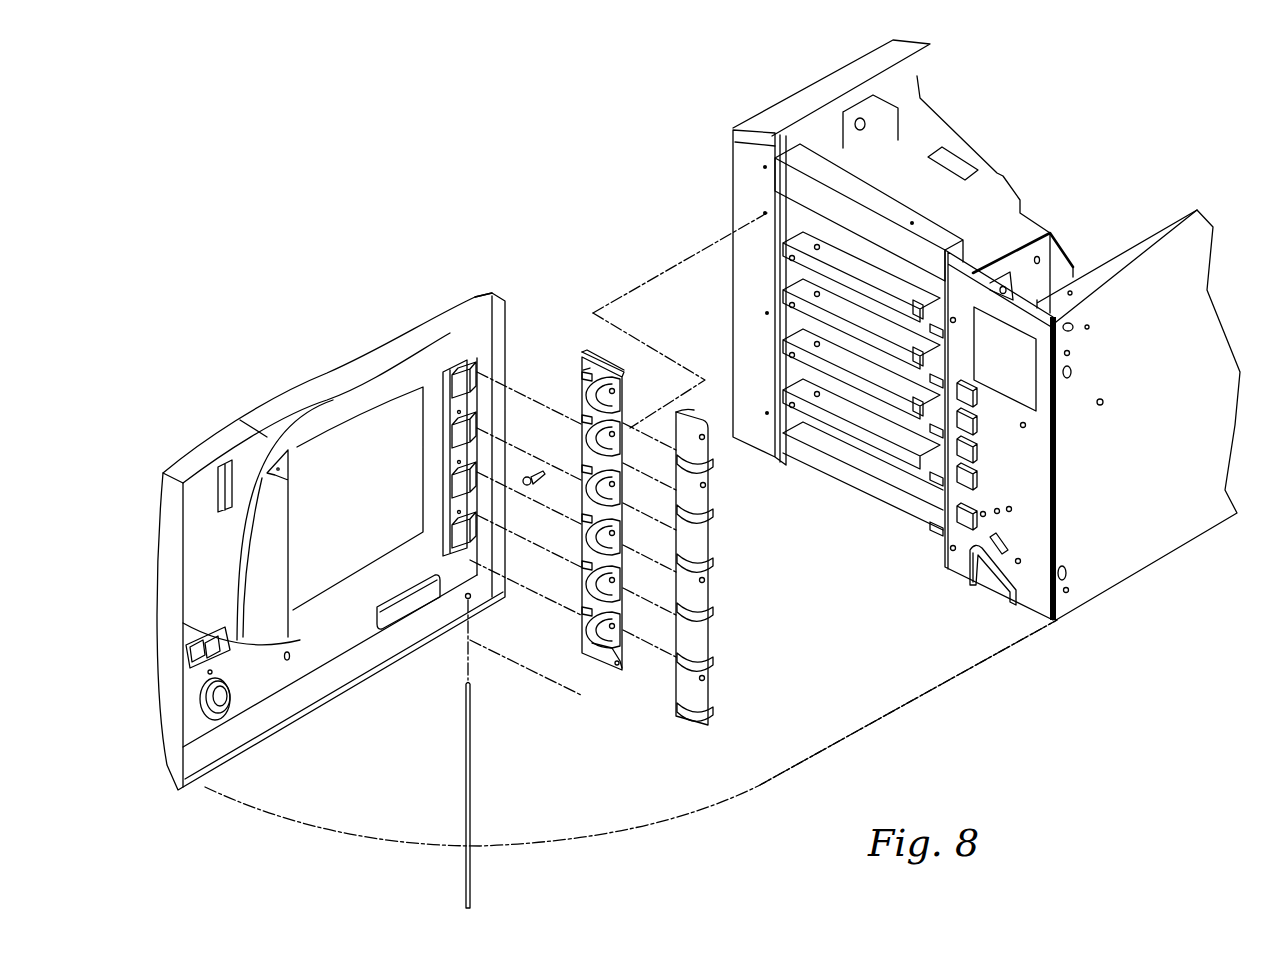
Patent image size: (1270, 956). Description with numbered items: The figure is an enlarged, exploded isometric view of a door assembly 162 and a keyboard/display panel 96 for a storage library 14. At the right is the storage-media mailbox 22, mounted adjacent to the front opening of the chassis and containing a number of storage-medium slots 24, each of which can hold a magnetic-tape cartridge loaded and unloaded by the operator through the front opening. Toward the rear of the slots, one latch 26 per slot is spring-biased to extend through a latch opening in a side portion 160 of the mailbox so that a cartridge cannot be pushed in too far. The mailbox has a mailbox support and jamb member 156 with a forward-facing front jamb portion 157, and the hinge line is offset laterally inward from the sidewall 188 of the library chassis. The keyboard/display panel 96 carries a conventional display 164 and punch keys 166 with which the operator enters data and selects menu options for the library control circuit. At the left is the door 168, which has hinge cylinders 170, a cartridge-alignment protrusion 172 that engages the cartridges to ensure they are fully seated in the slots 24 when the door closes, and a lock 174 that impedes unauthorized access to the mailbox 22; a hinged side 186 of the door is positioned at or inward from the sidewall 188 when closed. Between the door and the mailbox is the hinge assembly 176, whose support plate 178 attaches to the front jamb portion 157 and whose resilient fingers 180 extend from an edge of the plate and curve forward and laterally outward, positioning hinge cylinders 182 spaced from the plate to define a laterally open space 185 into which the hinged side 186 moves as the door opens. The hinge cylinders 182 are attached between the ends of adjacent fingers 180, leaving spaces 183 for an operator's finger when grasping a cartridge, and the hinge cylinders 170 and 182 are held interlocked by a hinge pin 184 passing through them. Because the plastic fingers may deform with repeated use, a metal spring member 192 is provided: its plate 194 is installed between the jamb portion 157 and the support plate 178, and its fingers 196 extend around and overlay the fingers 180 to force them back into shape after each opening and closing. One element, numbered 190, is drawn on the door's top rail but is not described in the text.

The library 14 is at (1020, 662).
The storage-media mailbox 22 is at (801, 270).
The storage-medium slots 24 is at (800, 322).
The latch 26 is at (903, 368).
The keyboard/display panel 96 is at (1053, 540).
The mailbox support and jamb member 156 is at (724, 182).
The front jamb portion 157 is at (743, 198).
The side portion 160 is at (783, 447).
The door assembly 162 is at (393, 277).
The display 164 is at (1040, 396).
The punch keys 166 is at (960, 453).
The door 168 is at (266, 395).
The hinge cylinders 170 is at (448, 362).
The cartridge-alignment protrusion 172 is at (281, 528).
The lock 174 is at (217, 725).
The hinge assembly 176 is at (574, 359).
The support plate 178 is at (606, 366).
The resilient fingers 180 is at (612, 420).
The hinge cylinders 182 is at (586, 423).
The spaces 183 is at (614, 582).
The hinge pin 184 is at (472, 906).
The laterally open space 185 is at (592, 392).
The hinged side 186 is at (497, 333).
The sidewall 188 is at (733, 162).
The top frame rail 190 is at (338, 358).
The metal spring member 192 is at (711, 544).
The plate 194 is at (678, 412).
The spring fingers 196 is at (708, 614).